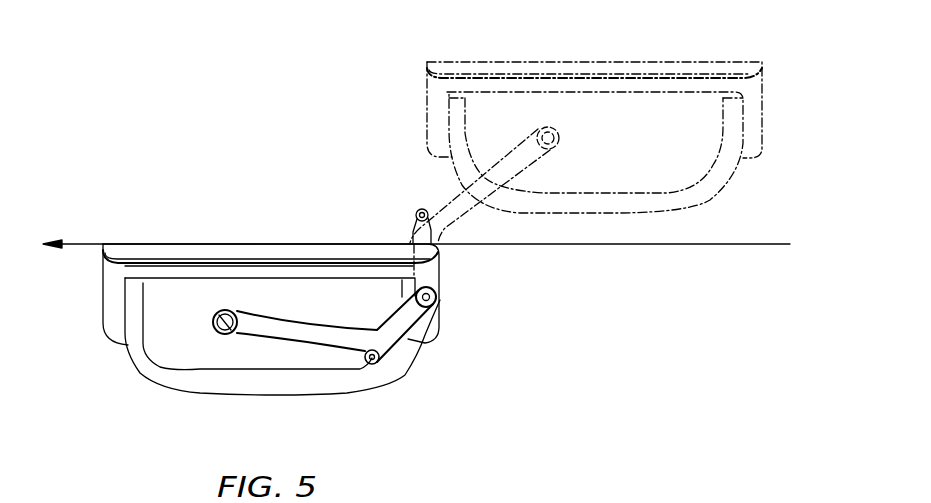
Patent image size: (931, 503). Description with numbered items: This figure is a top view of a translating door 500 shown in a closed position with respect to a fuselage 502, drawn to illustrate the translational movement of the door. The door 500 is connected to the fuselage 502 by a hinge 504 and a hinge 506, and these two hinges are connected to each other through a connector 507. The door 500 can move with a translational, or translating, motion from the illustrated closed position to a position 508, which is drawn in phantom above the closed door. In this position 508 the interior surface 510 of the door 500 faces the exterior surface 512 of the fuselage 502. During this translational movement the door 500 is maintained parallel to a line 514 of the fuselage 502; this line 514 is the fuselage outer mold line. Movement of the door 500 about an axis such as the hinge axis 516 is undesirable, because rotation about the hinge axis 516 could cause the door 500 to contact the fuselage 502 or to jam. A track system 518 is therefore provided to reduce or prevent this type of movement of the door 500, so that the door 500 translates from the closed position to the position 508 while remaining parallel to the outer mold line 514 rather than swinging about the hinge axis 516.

The door 500 is at (435, 330).
The fuselage 502 is at (620, 298).
The hinge 504 is at (437, 313).
The hinge 506 is at (213, 322).
The connector 507 is at (383, 338).
The position 508 is at (595, 62).
The interior surface 510 is at (288, 395).
The exterior surface 512 is at (768, 243).
The line 514 is at (82, 243).
The hinge axis 516 is at (233, 308).
The track system 518 is at (318, 277).